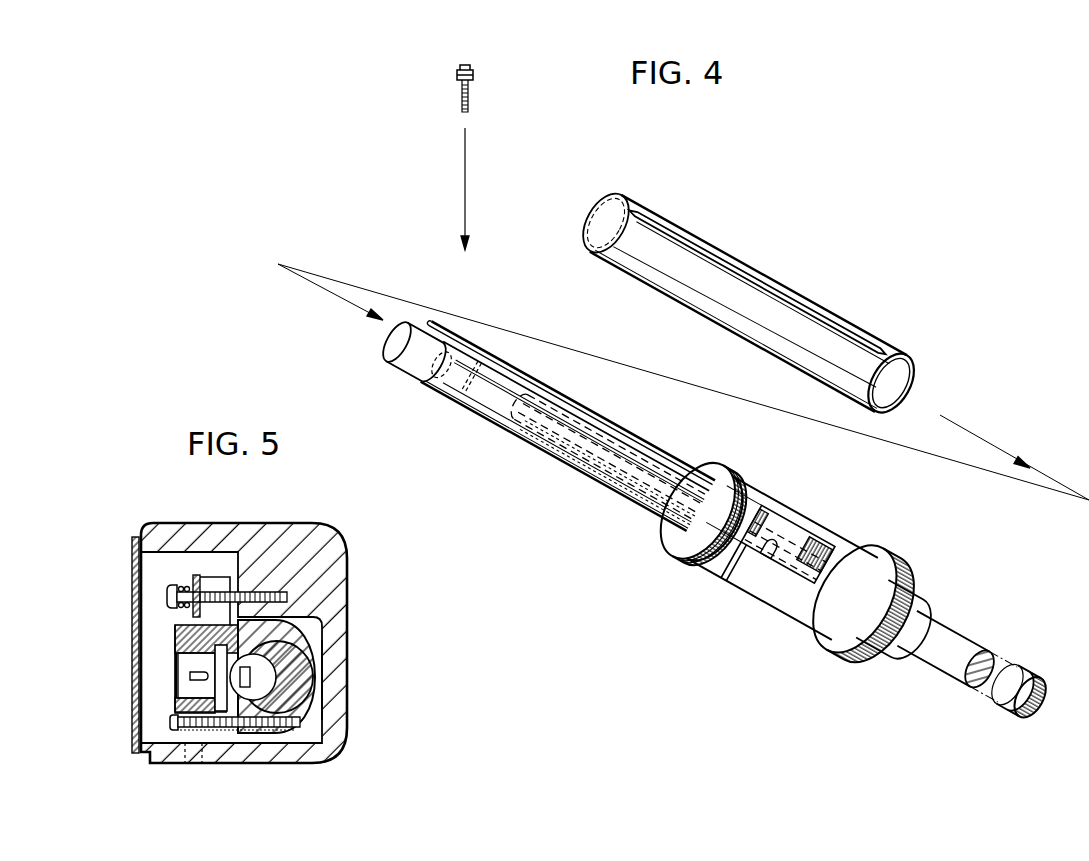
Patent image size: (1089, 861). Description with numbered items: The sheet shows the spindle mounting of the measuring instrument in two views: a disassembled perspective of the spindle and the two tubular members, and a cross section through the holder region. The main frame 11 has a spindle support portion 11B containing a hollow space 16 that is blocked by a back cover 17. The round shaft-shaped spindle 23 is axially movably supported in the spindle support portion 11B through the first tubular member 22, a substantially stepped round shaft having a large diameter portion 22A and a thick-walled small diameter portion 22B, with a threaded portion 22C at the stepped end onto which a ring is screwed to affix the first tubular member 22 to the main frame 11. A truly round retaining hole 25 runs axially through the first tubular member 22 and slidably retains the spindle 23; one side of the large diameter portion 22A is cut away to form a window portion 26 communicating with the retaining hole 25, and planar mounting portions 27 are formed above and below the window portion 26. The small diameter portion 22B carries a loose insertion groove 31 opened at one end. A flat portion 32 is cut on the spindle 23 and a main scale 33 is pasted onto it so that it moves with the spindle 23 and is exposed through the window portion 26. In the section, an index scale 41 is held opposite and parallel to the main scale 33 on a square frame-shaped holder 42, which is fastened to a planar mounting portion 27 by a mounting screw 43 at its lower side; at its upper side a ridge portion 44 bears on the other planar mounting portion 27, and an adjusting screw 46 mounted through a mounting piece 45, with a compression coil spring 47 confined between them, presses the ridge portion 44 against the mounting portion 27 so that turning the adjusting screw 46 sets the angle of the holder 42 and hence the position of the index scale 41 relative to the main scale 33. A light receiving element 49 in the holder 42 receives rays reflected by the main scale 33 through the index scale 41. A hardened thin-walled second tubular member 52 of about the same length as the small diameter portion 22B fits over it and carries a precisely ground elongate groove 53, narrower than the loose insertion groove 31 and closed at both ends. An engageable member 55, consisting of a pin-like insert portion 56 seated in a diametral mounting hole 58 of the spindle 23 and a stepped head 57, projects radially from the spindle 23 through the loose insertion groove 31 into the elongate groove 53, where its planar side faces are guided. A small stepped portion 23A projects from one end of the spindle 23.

In FIG. 5, the main frame 11 is at (328, 561).
In FIG. 5, the spindle support portion 11B is at (332, 680).
In FIG. 5, the hollow space 16 is at (150, 712).
In FIG. 5, the back cover 17 is at (135, 560).
In FIG. 4, the first tubular member 22 is at (768, 495).
In FIG. 5, the first tubular member 22 is at (300, 713).
In FIG. 4, the large diameter portion 22A is at (867, 548).
In FIG. 5, the large diameter portion 22A is at (313, 690).
In FIG. 4, the small diameter portion 22B is at (409, 372).
In FIG. 4, the threaded portion 22C is at (685, 552).
In FIG. 4, the spindle 23 is at (913, 620).
In FIG. 5, the spindle 23 is at (270, 667).
In FIG. 4, the small stepped portion 23A is at (418, 352).
In FIG. 4, the retaining hole 25 is at (393, 353).
In FIG. 4, the window portion 26 is at (765, 580).
In FIG. 5, the window portion 26 is at (232, 700).
In FIG. 4, the planar mounting portions 27 is at (805, 537).
In FIG. 5, the planar mounting portions 27 is at (177, 647).
In FIG. 4, the loose insertion groove 31 is at (424, 306).
In FIG. 4, the flat portion 32 is at (641, 441).
In FIG. 5, the flat portion 32 is at (193, 663).
In FIG. 4, the main scale 33 is at (568, 455).
In FIG. 5, the main scale 33 is at (293, 727).
In FIG. 5, the index scale 41 is at (220, 727).
In FIG. 5, the holder 42 is at (173, 632).
In FIG. 5, the mounting screw 43 is at (295, 730).
In FIG. 5, the ridge portion 44 is at (312, 614).
In FIG. 5, the mounting piece 45 is at (250, 600).
In FIG. 5, the adjusting screw 46 is at (213, 600).
In FIG. 5, the compression coil spring 47 is at (189, 592).
In FIG. 5, the light receiving element 49 is at (192, 678).
In FIG. 4, the second tubular member 52 is at (883, 352).
In FIG. 4, the elongate groove 53 is at (793, 302).
In FIG. 4, the engageable member 55 is at (509, 92).
In FIG. 4, the insert portion 56 is at (522, 70).
In FIG. 4, the head 57 is at (478, 76).
In FIG. 4, the mounting hole 58 is at (452, 392).